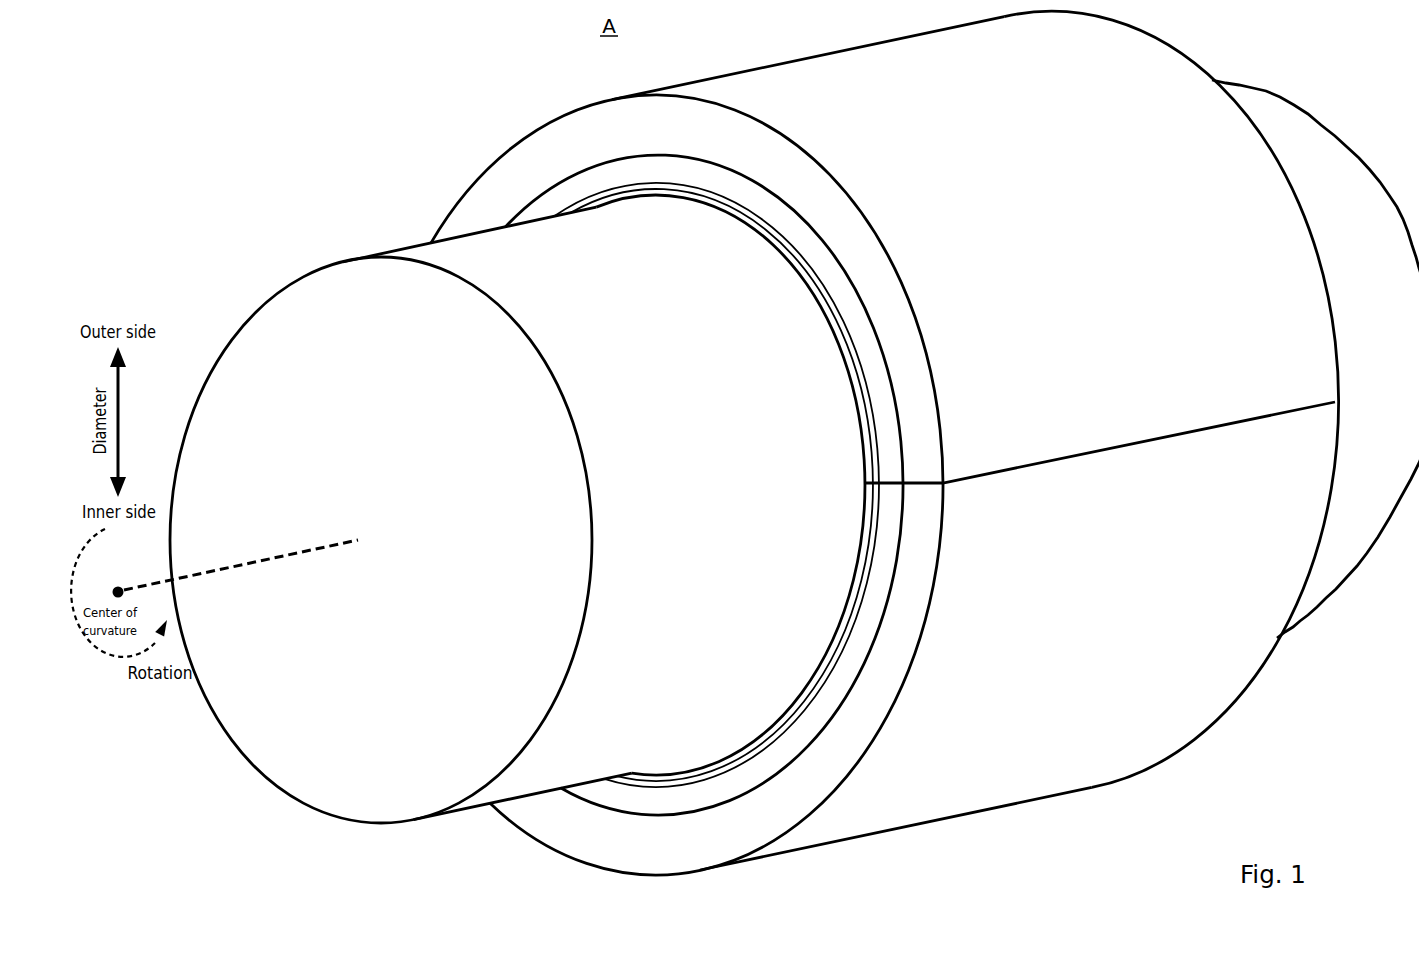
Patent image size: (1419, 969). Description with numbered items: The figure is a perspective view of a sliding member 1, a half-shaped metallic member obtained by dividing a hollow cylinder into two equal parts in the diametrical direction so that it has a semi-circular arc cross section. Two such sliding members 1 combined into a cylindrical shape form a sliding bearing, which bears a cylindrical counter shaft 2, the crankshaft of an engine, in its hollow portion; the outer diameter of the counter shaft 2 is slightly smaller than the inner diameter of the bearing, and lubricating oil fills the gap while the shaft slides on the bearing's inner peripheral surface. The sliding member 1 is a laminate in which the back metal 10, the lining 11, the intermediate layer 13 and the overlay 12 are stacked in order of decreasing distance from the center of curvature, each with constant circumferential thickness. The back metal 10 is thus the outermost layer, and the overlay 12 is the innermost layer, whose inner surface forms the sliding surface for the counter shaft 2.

The sliding member 1 is at (771, 66).
The counter shaft 2 is at (283, 289).
The back metal 10 is at (630, 121).
The lining 11 is at (613, 177).
The overlay 12 is at (610, 193).
The intermediate layer 13 is at (687, 190).